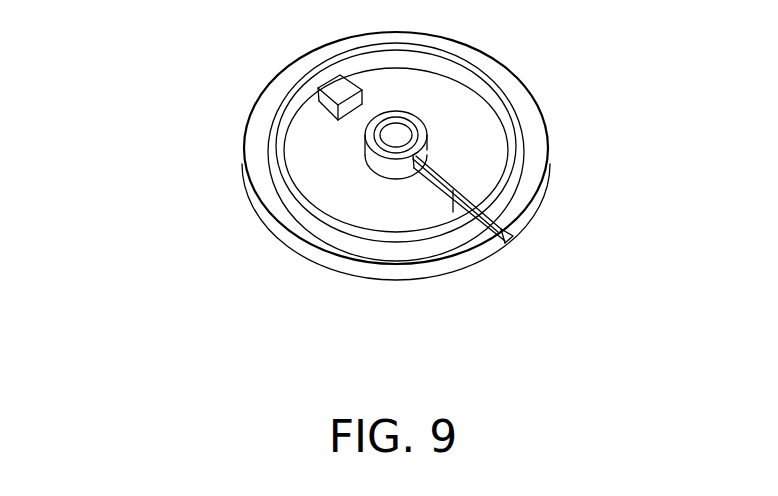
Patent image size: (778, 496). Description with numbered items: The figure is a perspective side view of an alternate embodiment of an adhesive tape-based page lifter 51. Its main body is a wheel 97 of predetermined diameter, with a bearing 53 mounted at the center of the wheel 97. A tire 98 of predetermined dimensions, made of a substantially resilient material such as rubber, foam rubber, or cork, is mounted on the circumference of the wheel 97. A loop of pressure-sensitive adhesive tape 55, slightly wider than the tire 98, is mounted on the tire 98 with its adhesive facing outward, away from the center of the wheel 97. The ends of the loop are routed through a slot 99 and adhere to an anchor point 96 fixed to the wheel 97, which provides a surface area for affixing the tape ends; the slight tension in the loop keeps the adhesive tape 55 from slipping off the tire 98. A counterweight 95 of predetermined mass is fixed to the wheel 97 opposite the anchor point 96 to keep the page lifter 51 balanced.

The page lifter 51 is at (205, 99).
The bearing 53 is at (377, 133).
The adhesive tape 55 is at (503, 232).
The counterweight 95 is at (337, 82).
The anchor point 96 is at (421, 169).
The wheel 97 is at (365, 213).
The tire 98 is at (462, 52).
The slot 99 is at (495, 243).